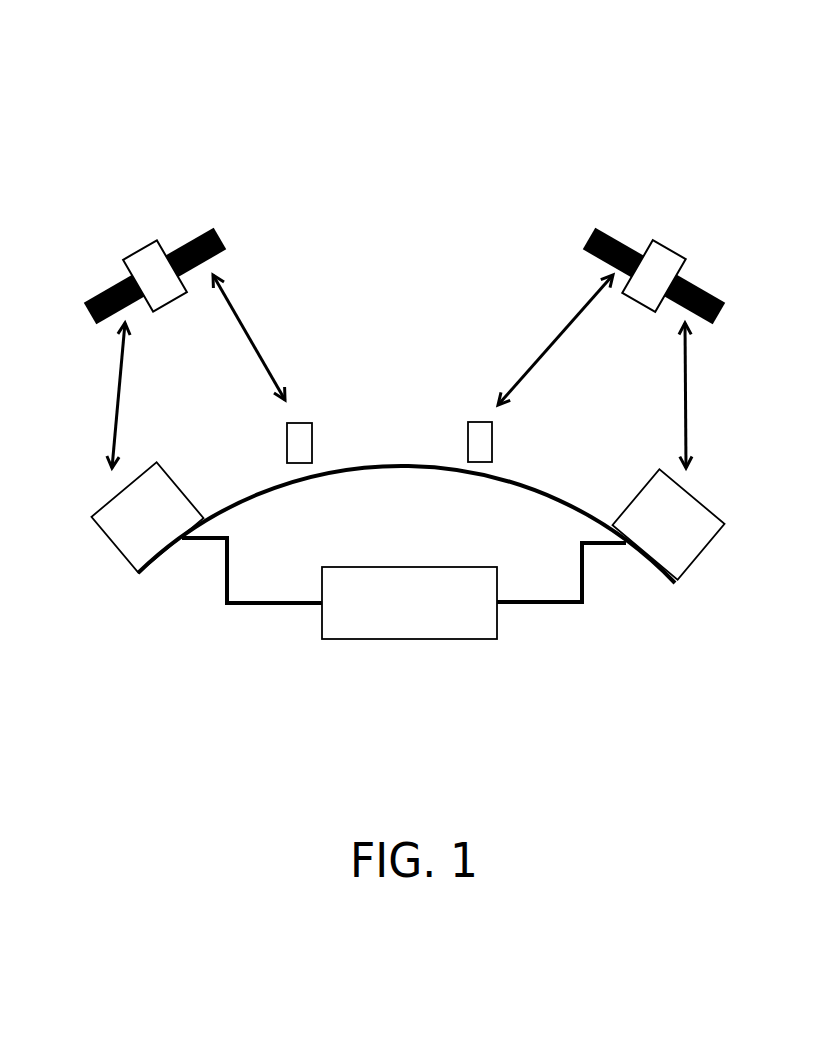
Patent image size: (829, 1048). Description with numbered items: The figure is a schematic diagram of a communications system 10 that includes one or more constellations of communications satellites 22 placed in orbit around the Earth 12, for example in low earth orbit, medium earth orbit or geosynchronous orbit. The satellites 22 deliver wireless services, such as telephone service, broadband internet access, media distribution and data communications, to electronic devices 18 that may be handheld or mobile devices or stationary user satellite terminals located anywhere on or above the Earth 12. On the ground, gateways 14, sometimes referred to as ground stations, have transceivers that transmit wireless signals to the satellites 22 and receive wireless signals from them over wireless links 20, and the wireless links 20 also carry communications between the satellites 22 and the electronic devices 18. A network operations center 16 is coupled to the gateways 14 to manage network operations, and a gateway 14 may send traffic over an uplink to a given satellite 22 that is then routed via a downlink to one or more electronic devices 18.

The communications system 10 is at (356, 100).
The Earth 12 is at (247, 493).
The gateway 14 is at (112, 547).
The network operations center 16 is at (470, 638).
The electronic device 18 is at (298, 463).
The wireless link 20 is at (250, 353).
The communications satellite 22 is at (140, 247).